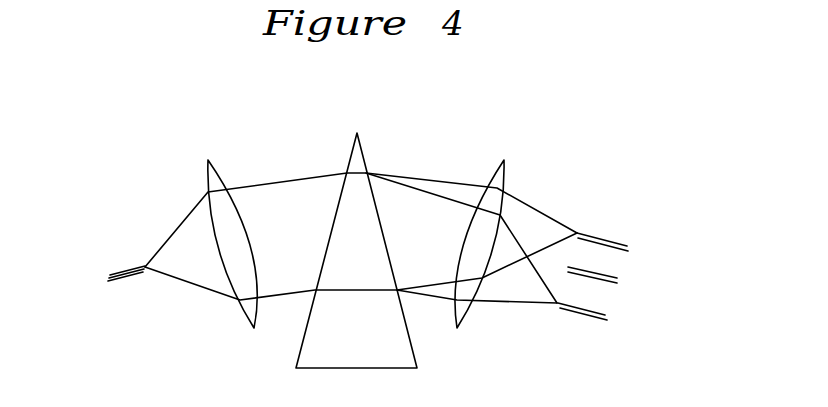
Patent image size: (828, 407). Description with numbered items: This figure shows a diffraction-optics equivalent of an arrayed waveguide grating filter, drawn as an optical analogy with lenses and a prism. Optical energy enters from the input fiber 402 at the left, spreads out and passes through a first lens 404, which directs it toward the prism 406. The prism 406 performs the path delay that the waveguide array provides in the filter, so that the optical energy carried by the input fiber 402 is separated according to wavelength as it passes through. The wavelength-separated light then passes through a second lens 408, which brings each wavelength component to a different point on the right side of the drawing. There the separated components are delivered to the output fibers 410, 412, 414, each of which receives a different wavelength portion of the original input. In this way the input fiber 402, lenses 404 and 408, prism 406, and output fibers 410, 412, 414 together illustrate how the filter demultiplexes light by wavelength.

The input fiber 402 is at (114, 290).
The lens 404 is at (214, 232).
The prism 406 is at (356, 233).
The lens 408 is at (497, 227).
The output fiber 410 is at (629, 247).
The output fiber 412 is at (622, 283).
The output fiber 414 is at (614, 324).